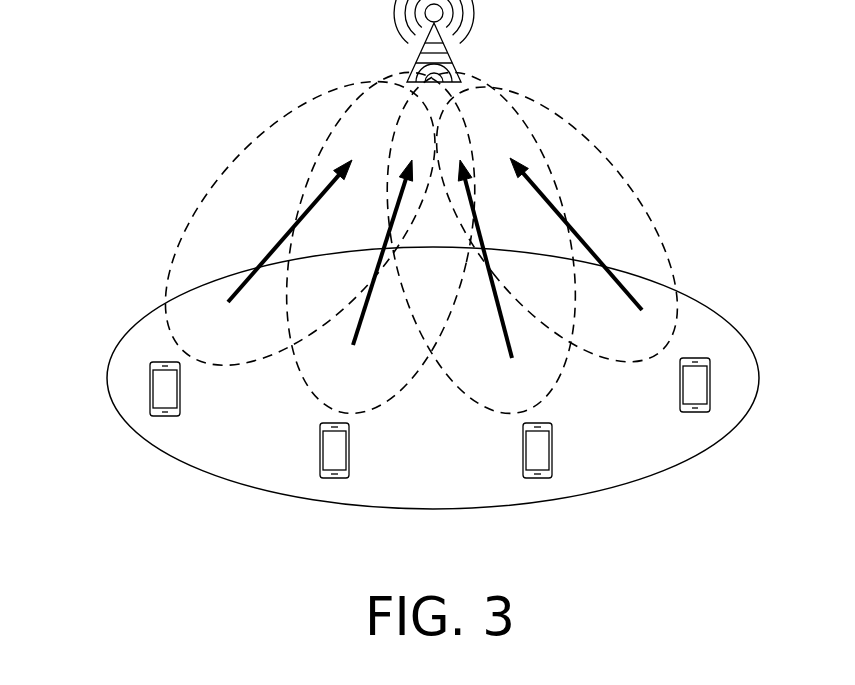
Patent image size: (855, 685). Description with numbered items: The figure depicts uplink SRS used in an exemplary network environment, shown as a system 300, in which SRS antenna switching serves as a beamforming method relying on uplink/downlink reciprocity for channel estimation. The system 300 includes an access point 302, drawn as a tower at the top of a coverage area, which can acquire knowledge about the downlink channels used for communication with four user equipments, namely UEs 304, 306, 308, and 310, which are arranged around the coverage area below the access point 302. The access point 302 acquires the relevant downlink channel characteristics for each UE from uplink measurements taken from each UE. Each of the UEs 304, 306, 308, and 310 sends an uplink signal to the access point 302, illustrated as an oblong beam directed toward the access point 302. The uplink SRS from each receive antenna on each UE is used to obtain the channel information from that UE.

The system 300 is at (58, 106).
The access point 302 is at (450, 62).
The UE 304 is at (150, 391).
The UE 306 is at (331, 478).
The UE 308 is at (540, 478).
The UE 310 is at (710, 387).